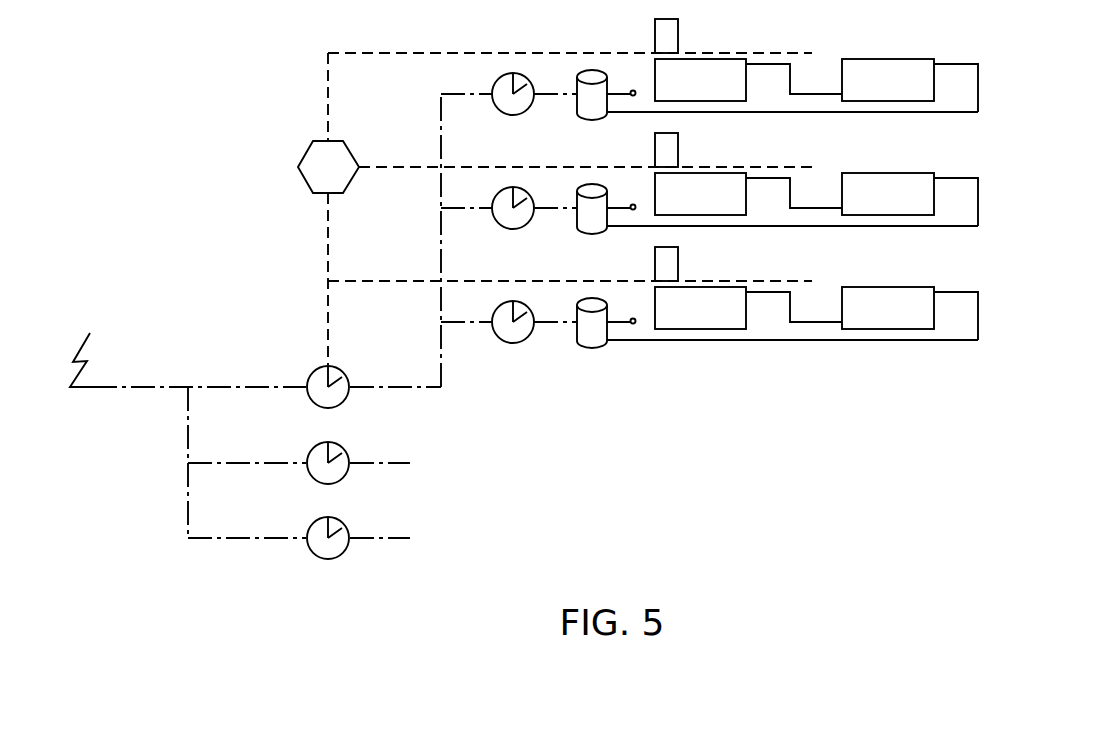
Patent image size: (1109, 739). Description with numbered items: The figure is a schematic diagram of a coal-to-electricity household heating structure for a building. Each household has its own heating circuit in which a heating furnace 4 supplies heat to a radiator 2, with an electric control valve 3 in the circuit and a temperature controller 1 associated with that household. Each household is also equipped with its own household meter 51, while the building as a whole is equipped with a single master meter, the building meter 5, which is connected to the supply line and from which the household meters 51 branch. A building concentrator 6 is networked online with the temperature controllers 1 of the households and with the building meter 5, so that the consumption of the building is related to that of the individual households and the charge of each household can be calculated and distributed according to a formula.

The temperature controller 1 is at (657, 281).
The radiator 2 is at (816, 199).
The electric control valve 3 is at (642, 199).
The heating furnace 4 is at (777, 209).
The building meter 5 is at (333, 451).
The household meter 51 is at (513, 222).
The building concentrator 6 is at (555, 209).